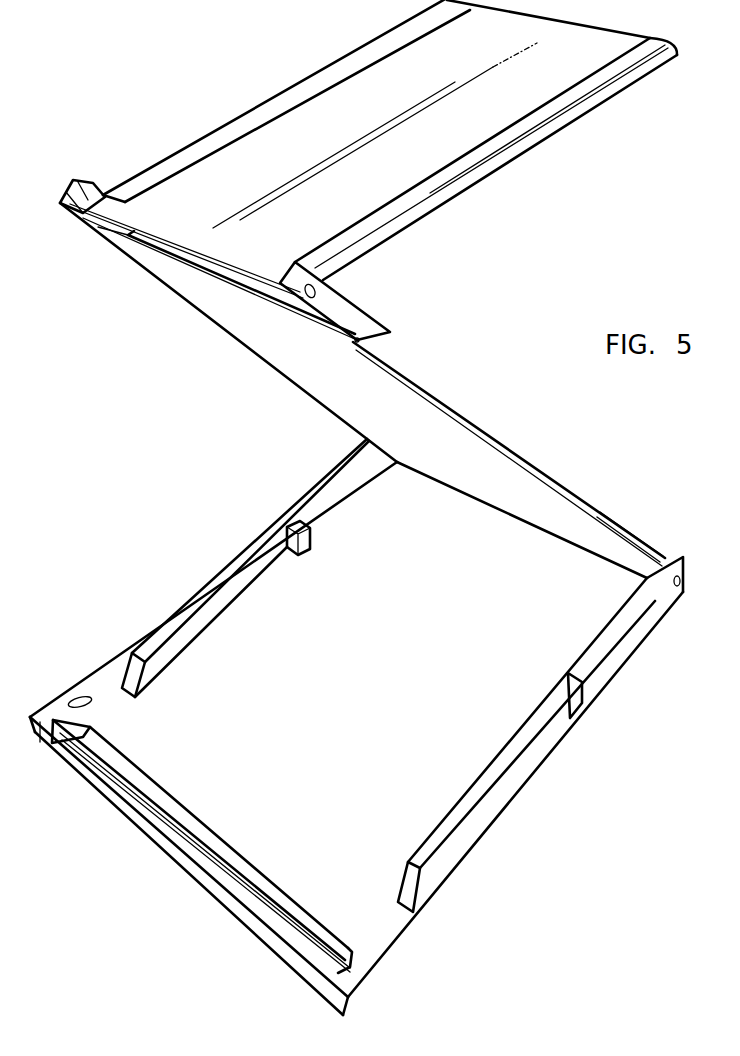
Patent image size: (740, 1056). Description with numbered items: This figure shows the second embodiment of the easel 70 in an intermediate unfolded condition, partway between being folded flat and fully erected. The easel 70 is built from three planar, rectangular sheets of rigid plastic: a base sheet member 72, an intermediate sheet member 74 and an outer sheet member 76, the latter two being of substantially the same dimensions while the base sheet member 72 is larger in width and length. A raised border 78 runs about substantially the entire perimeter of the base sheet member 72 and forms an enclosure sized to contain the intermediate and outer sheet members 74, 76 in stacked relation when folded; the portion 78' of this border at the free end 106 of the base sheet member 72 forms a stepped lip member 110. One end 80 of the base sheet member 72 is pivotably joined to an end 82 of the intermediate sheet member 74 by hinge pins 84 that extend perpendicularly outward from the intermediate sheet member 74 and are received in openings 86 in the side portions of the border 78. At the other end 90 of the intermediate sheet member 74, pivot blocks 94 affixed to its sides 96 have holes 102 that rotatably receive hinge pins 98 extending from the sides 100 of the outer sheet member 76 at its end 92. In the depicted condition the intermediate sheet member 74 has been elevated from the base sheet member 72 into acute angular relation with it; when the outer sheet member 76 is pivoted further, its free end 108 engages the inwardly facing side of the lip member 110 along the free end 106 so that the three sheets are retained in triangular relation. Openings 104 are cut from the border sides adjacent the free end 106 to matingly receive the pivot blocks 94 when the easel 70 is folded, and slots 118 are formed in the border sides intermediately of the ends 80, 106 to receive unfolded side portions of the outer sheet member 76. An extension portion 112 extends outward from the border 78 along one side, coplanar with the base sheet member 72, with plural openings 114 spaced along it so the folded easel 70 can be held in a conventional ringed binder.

The easel 70 is at (229, 500).
The base sheet member 72 is at (386, 721).
The intermediate sheet member 74 is at (330, 365).
The outer sheet member 76 is at (380, 198).
The raised border 78 is at (526, 747).
The border portion 78' is at (202, 846).
The end of base sheet member 80 is at (660, 616).
The end of intermediate sheet member 82 is at (598, 540).
The hinge pins 84 is at (688, 580).
The openings 86 is at (686, 564).
The other end of intermediate sheet member 90 is at (197, 270).
The end of outer sheet member 92 is at (155, 233).
The pivot blocks 94 is at (72, 182).
The sides of intermediate sheet member 96 is at (353, 437).
The hinge pins 98 is at (318, 282).
The sides of outer sheet member 100 is at (98, 230).
The holes 102 is at (358, 341).
The openings 104 is at (110, 712).
The free end of base sheet member 106 is at (248, 758).
The free end of outer sheet member 108 is at (652, 36).
The stepped lip member 110 is at (300, 912).
The extension portion 112 is at (118, 660).
The openings 114 is at (70, 692).
The slots 118 is at (300, 560).